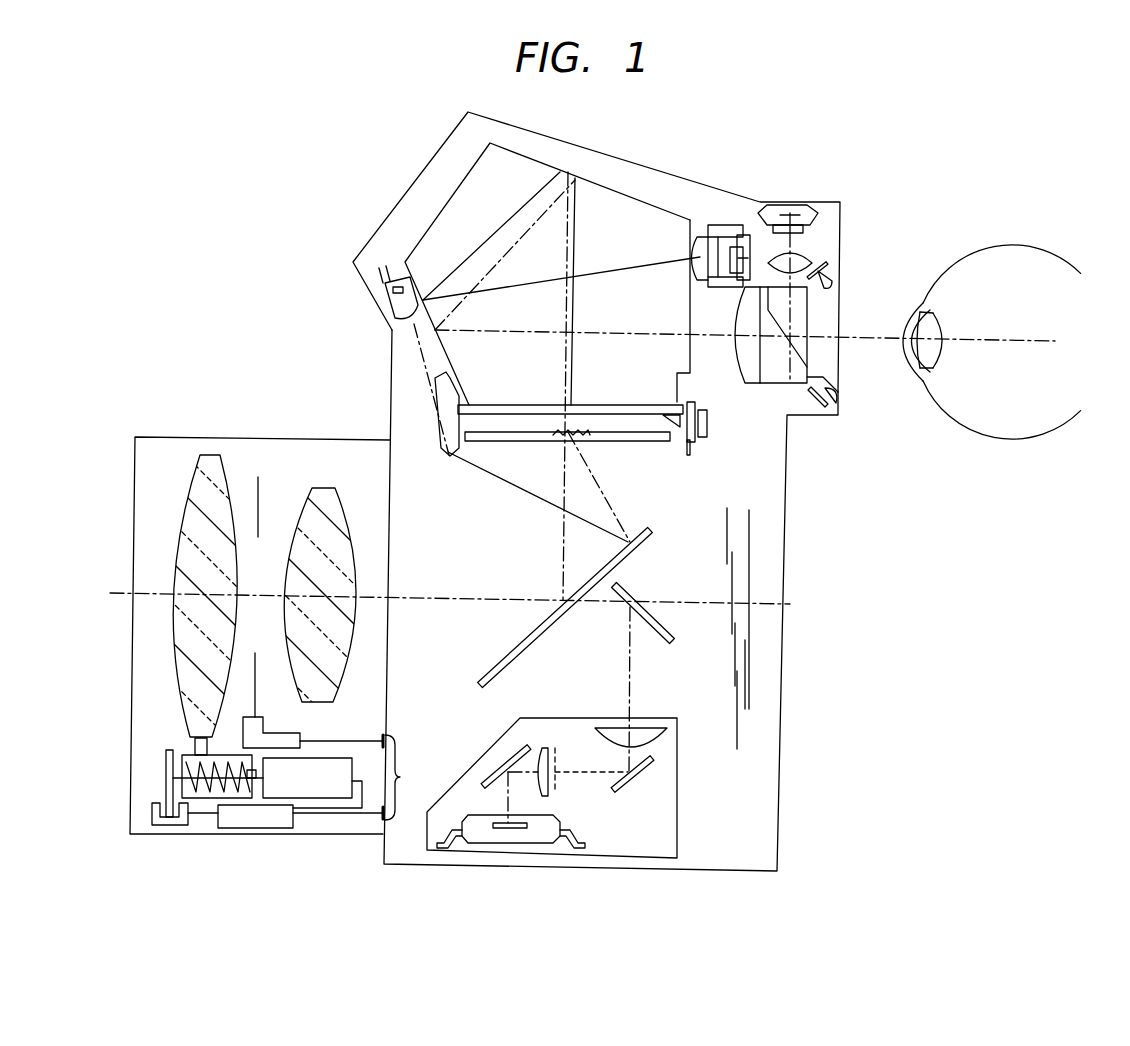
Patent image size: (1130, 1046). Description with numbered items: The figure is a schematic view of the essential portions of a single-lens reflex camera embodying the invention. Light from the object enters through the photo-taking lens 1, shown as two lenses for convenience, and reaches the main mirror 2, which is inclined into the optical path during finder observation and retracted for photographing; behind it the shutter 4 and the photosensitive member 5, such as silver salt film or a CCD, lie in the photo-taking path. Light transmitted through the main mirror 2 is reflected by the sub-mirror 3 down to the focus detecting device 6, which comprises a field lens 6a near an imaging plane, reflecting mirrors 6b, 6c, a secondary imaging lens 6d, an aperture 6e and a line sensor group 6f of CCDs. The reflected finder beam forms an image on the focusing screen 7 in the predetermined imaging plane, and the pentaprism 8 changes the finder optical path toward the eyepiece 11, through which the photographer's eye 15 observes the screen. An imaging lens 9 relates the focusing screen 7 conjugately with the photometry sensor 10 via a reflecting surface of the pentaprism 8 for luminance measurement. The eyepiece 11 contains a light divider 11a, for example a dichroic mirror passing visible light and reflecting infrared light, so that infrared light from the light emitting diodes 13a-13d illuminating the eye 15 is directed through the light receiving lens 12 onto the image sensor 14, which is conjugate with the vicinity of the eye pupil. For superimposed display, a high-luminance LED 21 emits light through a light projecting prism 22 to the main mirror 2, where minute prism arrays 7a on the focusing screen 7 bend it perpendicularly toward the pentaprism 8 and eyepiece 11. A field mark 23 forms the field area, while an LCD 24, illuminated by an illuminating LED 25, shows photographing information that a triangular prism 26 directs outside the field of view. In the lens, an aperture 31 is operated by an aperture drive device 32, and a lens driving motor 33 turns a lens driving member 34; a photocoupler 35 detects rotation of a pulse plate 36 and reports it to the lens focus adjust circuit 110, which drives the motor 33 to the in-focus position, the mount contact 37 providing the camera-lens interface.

The photo-taking lens 1 is at (265, 600).
The main mirror 2 is at (536, 638).
The sub-mirror 3 is at (668, 640).
The shutter 4 is at (727, 536).
The photosensitive member 5 is at (748, 662).
The focus detecting device 6 is at (677, 835).
The field lens 6a is at (668, 735).
The reflecting mirror 6b is at (628, 786).
The reflecting mirror 6c is at (481, 765).
The secondary imaging lens 6d is at (540, 748).
The aperture 6e is at (558, 748).
The line sensor group 6f is at (528, 827).
The focusing screen 7 is at (645, 441).
The minute prism arrays 7a is at (587, 438).
The pentaprism 8 is at (442, 222).
The imaging lens 9 is at (712, 240).
The photometry sensor 10 is at (745, 233).
The eyepiece 11 is at (742, 353).
The light divider 11a is at (790, 357).
The light receiving lens 12 is at (815, 258).
The infrared light emitting diodes 13a-13d is at (841, 417).
The image sensor 14 is at (806, 205).
The photographer's eye 15 is at (1037, 262).
The LED for superimposition 21 is at (386, 300).
The light projecting prism 22 is at (443, 393).
The field mark 23 is at (493, 415).
The LCD in finder 24 is at (691, 448).
The illuminating LED 25 is at (707, 425).
The triangular prism 26 is at (685, 455).
The aperture 31 is at (256, 693).
The aperture drive device 32 is at (302, 733).
The lens driving motor 33 is at (327, 800).
The lens driving member 34 is at (187, 750).
The photocoupler 35 is at (182, 827).
The pulse plate 36 is at (167, 783).
The mount contact 37 is at (409, 777).
The lens focus adjust circuit 110 is at (262, 828).